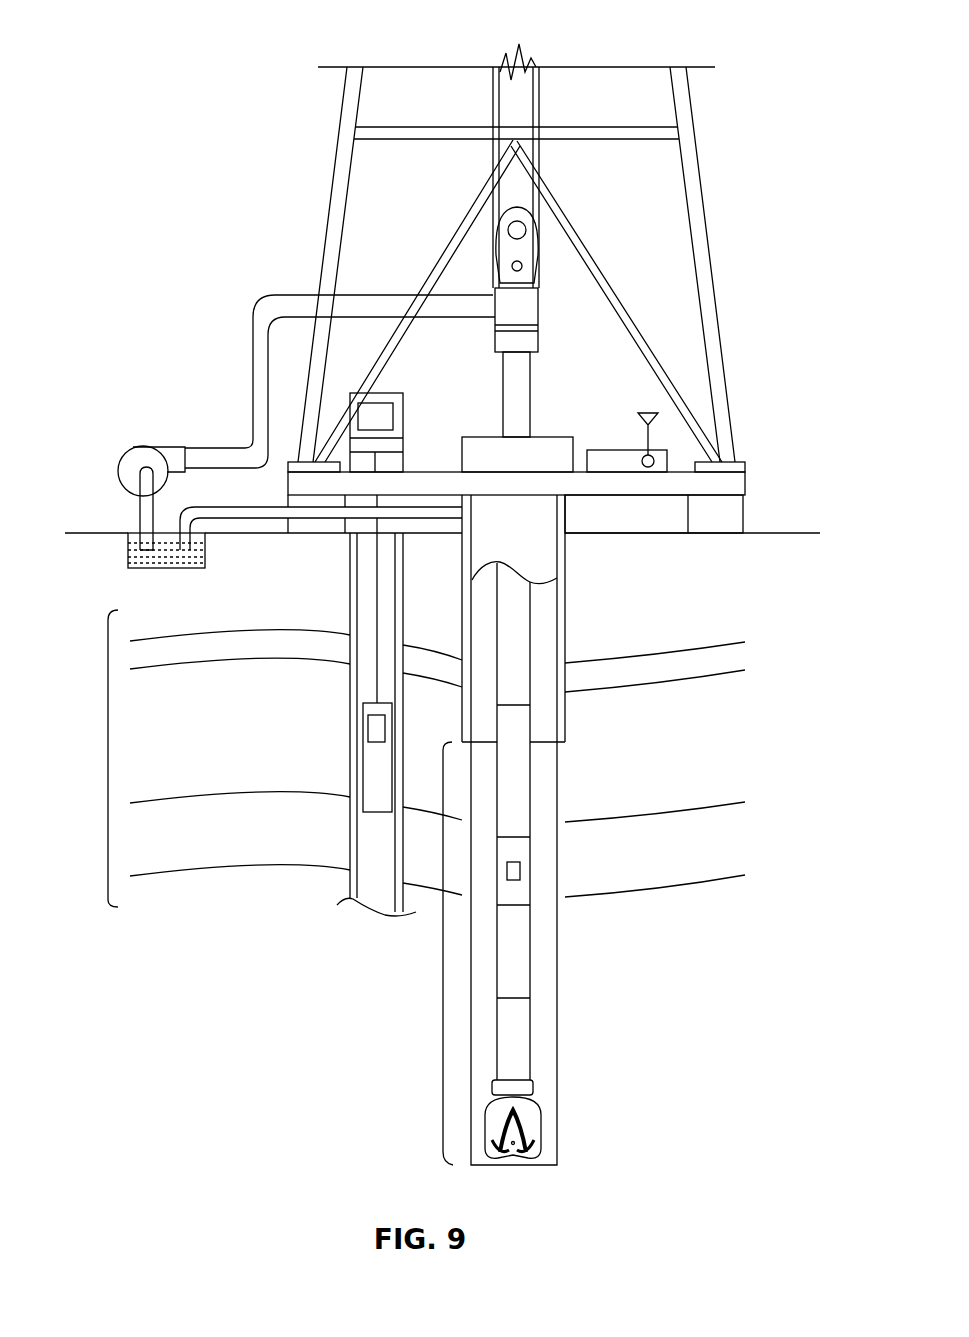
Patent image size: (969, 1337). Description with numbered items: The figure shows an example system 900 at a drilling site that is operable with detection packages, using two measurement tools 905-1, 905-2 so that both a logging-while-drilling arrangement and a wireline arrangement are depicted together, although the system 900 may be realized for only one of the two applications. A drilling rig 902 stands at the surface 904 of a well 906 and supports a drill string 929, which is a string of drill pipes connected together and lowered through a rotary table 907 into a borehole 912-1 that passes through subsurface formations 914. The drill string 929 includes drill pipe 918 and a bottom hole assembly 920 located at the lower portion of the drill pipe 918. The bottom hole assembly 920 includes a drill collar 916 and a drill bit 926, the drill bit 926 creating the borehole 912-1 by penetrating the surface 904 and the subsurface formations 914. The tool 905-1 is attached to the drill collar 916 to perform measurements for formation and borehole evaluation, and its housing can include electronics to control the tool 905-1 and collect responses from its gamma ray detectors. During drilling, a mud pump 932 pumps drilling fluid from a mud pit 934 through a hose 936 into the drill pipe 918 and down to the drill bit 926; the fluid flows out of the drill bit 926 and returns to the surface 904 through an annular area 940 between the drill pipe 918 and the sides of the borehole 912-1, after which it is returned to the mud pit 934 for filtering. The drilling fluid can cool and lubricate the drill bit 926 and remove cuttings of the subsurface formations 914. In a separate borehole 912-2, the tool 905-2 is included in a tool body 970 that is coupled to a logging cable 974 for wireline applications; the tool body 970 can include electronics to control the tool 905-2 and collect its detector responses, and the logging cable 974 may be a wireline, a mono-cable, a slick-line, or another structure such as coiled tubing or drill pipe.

The system 900 is at (209, 67).
The drilling rig 902 is at (708, 163).
The surface 904 is at (778, 532).
The well 906 is at (588, 527).
The rotary table 907 is at (483, 436).
The borehole 912-1 is at (553, 654).
The borehole 912-2 is at (350, 613).
The subsurface formations 914 is at (108, 765).
The drill collar 916 is at (517, 853).
The drill pipe 918 is at (532, 766).
The bottom hole assembly 920 is at (443, 958).
The drill bit 926 is at (542, 1113).
The drill string 929 is at (541, 603).
The mud pump 932 is at (147, 443).
The mud pit 934 is at (130, 534).
The hose 936 is at (257, 306).
The annular area 940 is at (546, 800).
The tool body 970 is at (363, 758).
The logging cable 974 is at (377, 568).
The tool 905-1 is at (523, 868).
The tool 905-2 is at (363, 722).